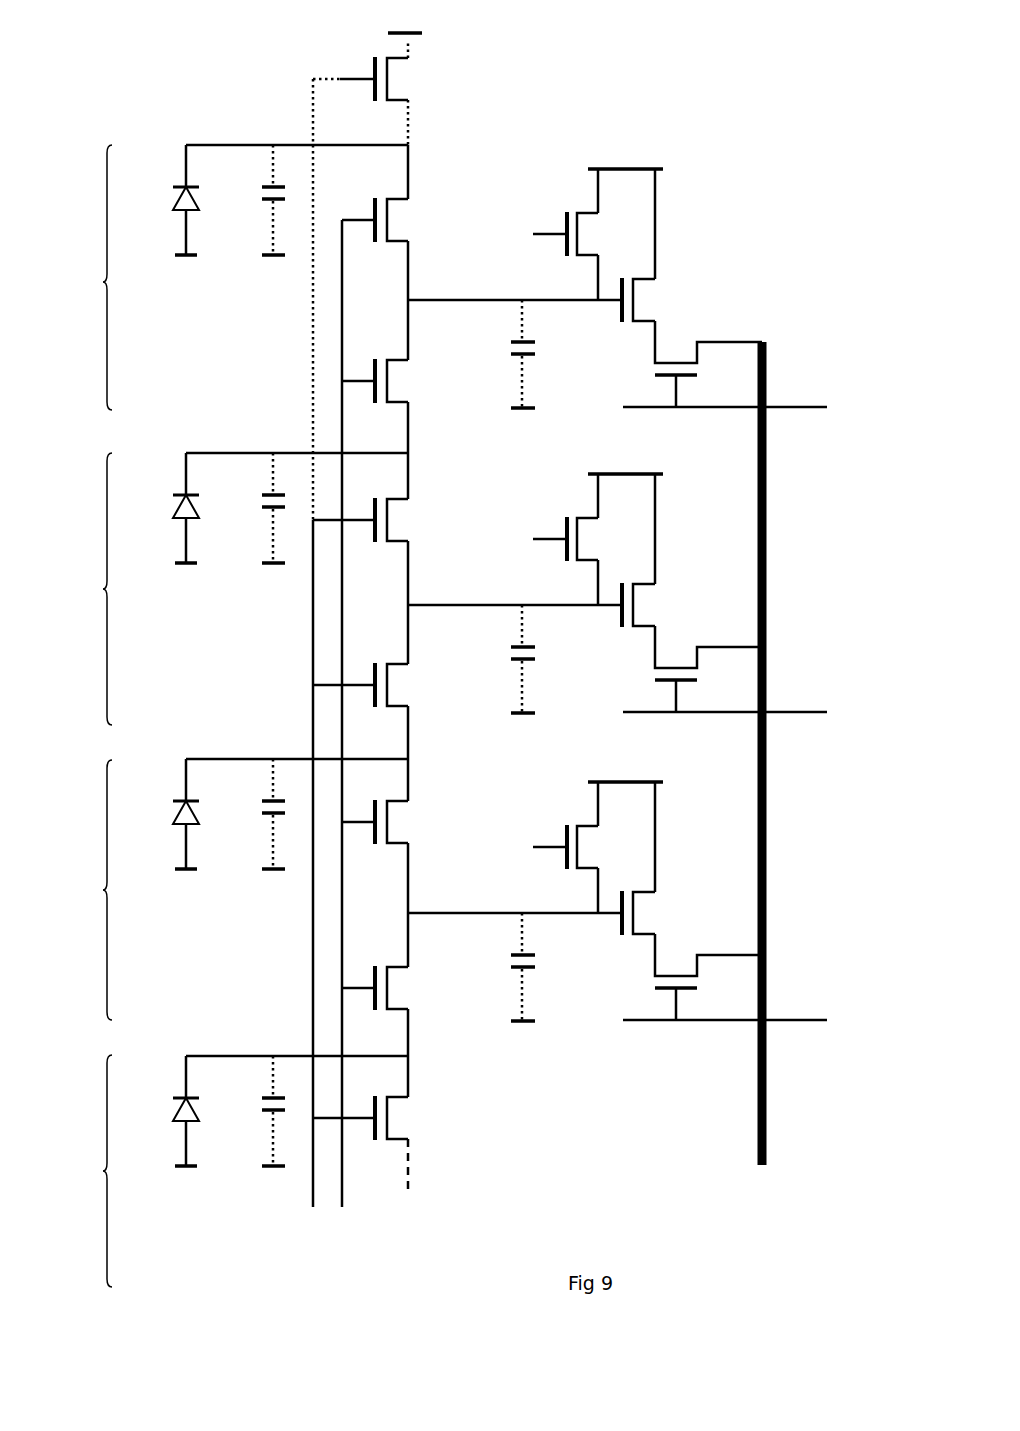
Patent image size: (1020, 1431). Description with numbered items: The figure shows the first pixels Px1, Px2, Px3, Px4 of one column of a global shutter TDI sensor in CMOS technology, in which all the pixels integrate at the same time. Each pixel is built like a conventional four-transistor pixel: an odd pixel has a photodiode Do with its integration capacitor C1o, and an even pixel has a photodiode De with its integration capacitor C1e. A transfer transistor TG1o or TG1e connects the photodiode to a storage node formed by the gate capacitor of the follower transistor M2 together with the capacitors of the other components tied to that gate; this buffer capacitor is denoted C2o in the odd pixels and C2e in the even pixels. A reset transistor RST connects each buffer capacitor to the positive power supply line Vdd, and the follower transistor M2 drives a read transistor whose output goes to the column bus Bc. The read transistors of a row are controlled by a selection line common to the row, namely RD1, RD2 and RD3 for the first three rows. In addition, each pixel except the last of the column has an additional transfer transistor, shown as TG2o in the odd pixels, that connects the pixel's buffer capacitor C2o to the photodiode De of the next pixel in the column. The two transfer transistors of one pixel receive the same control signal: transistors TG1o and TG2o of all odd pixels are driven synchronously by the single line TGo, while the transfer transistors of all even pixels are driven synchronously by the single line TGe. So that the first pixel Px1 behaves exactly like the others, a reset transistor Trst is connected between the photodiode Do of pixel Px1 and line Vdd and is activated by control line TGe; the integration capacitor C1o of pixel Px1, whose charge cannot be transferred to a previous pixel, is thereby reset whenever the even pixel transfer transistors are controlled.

The positive power supply line Vdd is at (525, 395).
The reset transistor Trst is at (374, 92).
The control line of even pixel transfer transistors TGe is at (299, 674).
The control line of odd pixel transfer transistors TGo is at (341, 745).
The column bus Bc is at (779, 753).
The first pixel Px1 is at (76, 277).
The second pixel Px2 is at (76, 589).
The third pixel Px3 is at (76, 890).
The fourth pixel Px4 is at (76, 1171).
The photodiode of odd pixel Do is at (168, 507).
The photodiode of even pixel De is at (168, 809).
The integration capacitor of odd pixel C1o is at (252, 507).
The integration capacitor of even pixel C1e is at (252, 809).
The transfer transistor of odd pixel TG1o is at (397, 521).
The additional transfer transistor of odd pixel TG2o is at (397, 684).
The transfer transistor of even pixel TG1e is at (382, 819).
The reset transistor RST is at (543, 539).
The follower transistor M2 is at (647, 606).
The selection line of first row RD1 is at (725, 408).
The selection line of second row RD2 is at (725, 713).
The selection line of third row RD3 is at (725, 1021).
The buffer capacitor of odd pixel C2o is at (542, 660).
The buffer capacitor of even pixel C2e is at (542, 659).